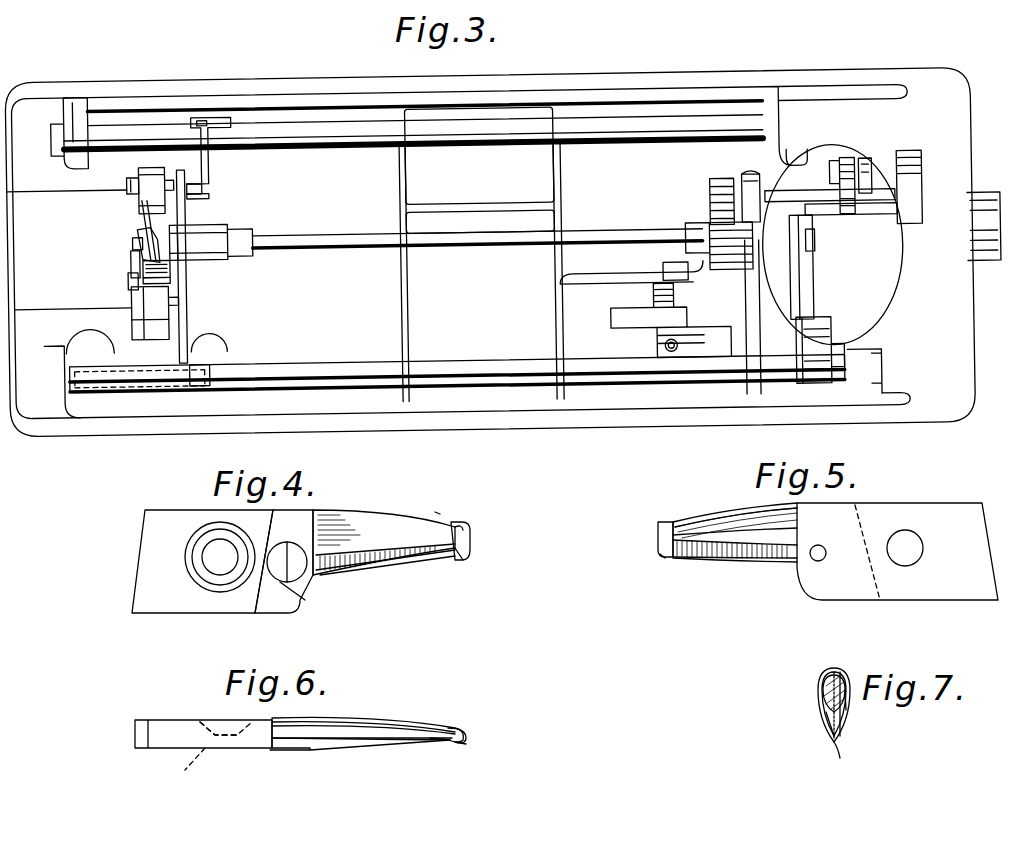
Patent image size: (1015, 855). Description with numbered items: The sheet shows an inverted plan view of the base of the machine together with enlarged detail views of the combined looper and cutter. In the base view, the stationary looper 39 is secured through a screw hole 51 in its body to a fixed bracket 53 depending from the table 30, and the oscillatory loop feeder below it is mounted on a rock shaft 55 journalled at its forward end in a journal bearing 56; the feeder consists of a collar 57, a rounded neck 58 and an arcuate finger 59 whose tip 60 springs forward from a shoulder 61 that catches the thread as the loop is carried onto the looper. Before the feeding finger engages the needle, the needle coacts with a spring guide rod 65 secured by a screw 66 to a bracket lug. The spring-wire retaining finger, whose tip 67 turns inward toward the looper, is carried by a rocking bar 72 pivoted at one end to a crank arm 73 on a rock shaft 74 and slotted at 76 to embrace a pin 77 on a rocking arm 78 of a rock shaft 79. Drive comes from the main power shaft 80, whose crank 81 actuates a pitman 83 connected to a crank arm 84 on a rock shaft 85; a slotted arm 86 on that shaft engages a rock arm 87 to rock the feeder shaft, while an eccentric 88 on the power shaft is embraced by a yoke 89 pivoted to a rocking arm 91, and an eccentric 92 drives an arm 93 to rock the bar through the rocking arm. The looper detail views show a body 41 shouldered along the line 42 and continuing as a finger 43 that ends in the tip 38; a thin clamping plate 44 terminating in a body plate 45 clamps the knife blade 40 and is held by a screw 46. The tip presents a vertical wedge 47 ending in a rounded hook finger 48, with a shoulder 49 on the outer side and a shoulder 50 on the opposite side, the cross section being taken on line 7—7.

In FIG. 3, the table 30 is at (504, 252).
In FIG. 3, the rock shaft 79 is at (346, 116).
In FIG. 3, the rock shaft 55 is at (343, 240).
In FIG. 3, the journal bearing 56 is at (235, 263).
In FIG. 3, the collar 57 is at (188, 232).
In FIG. 3, the neck 58 is at (167, 276).
In FIG. 3, the arcuate finger 59 is at (128, 274).
In FIG. 3, the tip 60 is at (136, 240).
In FIG. 3, the shoulder 61 is at (125, 284).
In FIG. 3, the spring guide rod 65 is at (142, 220).
In FIG. 3, the screw 66 is at (125, 188).
In FIG. 3, the tip 67 is at (140, 172).
In FIG. 3, the rocking bar 72 is at (180, 304).
In FIG. 3, the fixed bracket 53 is at (150, 320).
In FIG. 3, the crank arm 73 is at (200, 382).
In FIG. 3, the rock shaft 74 is at (465, 368).
In FIG. 3, the slot 76 is at (207, 216).
In FIG. 3, the pin 77 is at (207, 188).
In FIG. 3, the rocking arm 78 is at (203, 197).
In FIG. 3, the main power shaft 80 is at (834, 264).
In FIG. 3, the crank 81 is at (880, 266).
In FIG. 3, the pitman 83 is at (890, 168).
In FIG. 3, the crank arm 84 is at (847, 172).
In FIG. 3, the rock shaft 85 is at (782, 182).
In FIG. 3, the slotted arm 86 is at (756, 310).
In FIG. 3, the rock arm 87 is at (746, 302).
In FIG. 3, the eccentric 88 is at (811, 294).
In FIG. 3, the yoke 89 is at (760, 302).
In FIG. 3, the rocking arm 91 is at (794, 338).
In FIG. 3, the eccentric 92 is at (740, 188).
In FIG. 3, the arm 93 is at (708, 207).
In FIG. 3, the tip 38 is at (130, 246).
In FIG. 4, the tip 38 is at (470, 535).
In FIG. 6, the tip 38 is at (462, 735).
In FIG. 3, the stationary looper 39 is at (140, 266).
In FIG. 4, the stationary looper 39 is at (375, 506).
In FIG. 5, the stationary looper 39 is at (740, 495).
In FIG. 6, the stationary looper 39 is at (325, 713).
In FIG. 7, the stationary looper 39 is at (825, 658).
In FIG. 4, the knife blade 40 is at (348, 570).
In FIG. 5, the knife blade 40 is at (765, 560).
In FIG. 7, the knife blade 40 is at (828, 725).
In FIG. 4, the body 41 is at (180, 600).
In FIG. 5, the body 41 is at (915, 600).
In FIG. 6, the body 41 is at (203, 754).
In FIG. 4, the shoulder line 42 is at (262, 600).
In FIG. 5, the shoulder line 42 is at (860, 522).
In FIG. 6, the shoulder line 42 is at (262, 740).
In FIG. 5, the finger 43 is at (740, 550).
In FIG. 6, the finger 43 is at (380, 727).
In FIG. 7, the finger 43 is at (823, 692).
In FIG. 4, the clamping plate 44 is at (393, 572).
In FIG. 6, the clamping plate 44 is at (335, 748).
In FIG. 7, the clamping plate 44 is at (842, 680).
In FIG. 4, the body plate 45 is at (310, 600).
In FIG. 4, the screw 46 is at (280, 600).
In FIG. 5, the screw 46 is at (818, 545).
In FIG. 4, the wedge 47 is at (470, 547).
In FIG. 5, the wedge 47 is at (658, 535).
In FIG. 6, the wedge 47 is at (470, 742).
In FIG. 4, the hook finger 48 is at (465, 557).
In FIG. 5, the hook finger 48 is at (660, 553).
In FIG. 7, the hook finger 48 is at (836, 745).
In FIG. 4, the shoulder 49 is at (457, 526).
In FIG. 6, the shoulder 49 is at (445, 740).
In FIG. 7, the shoulder 49 is at (845, 705).
In FIG. 5, the shoulder 50 is at (680, 522).
In FIG. 7, the shoulder 50 is at (828, 702).
In FIG. 4, the screw hole 51 is at (185, 553).
In FIG. 5, the screw hole 51 is at (920, 545).
In FIG. 6, the screw hole 51 is at (190, 762).
In FIG. 4, the section line 7 is at (440, 570).